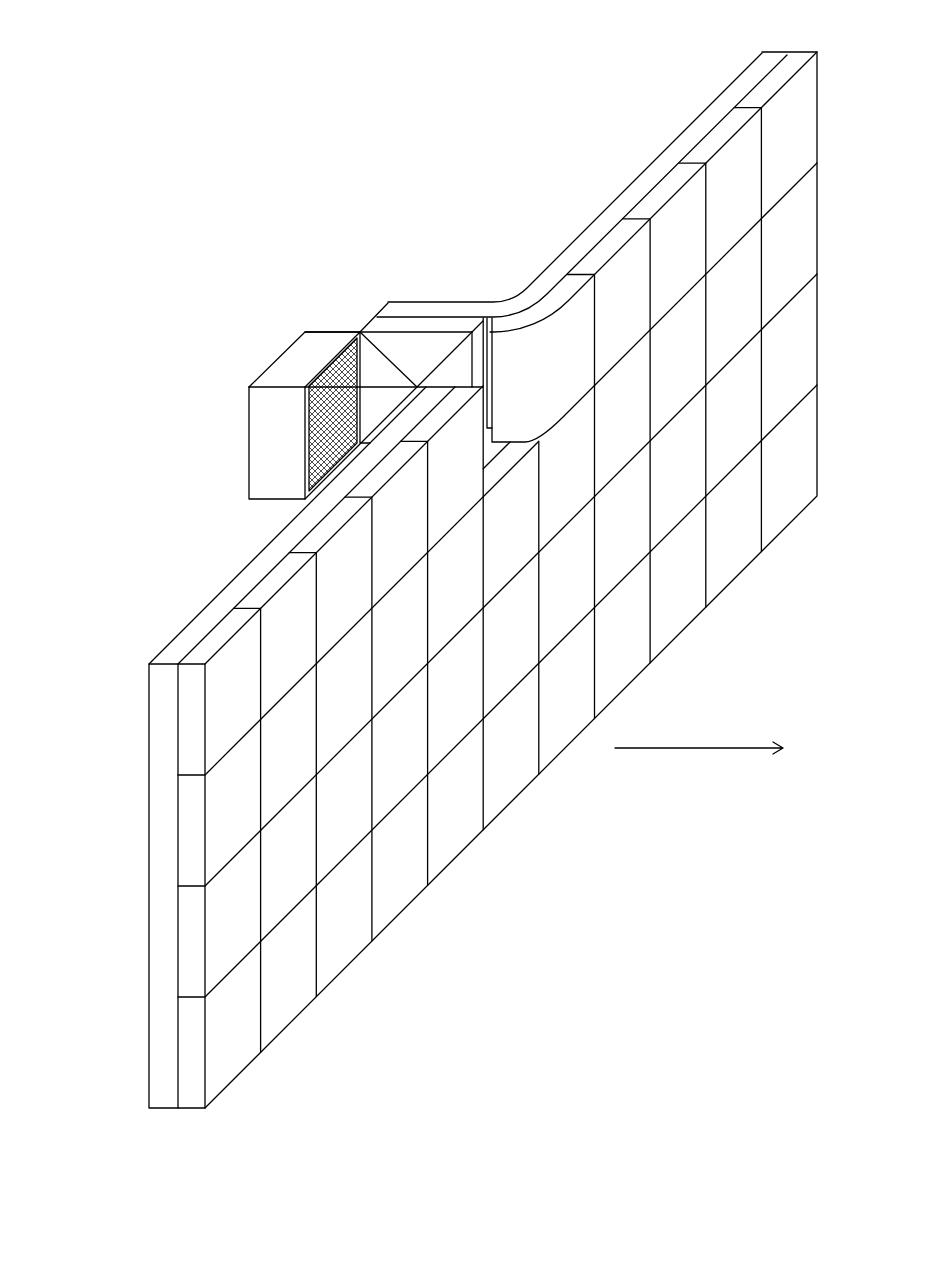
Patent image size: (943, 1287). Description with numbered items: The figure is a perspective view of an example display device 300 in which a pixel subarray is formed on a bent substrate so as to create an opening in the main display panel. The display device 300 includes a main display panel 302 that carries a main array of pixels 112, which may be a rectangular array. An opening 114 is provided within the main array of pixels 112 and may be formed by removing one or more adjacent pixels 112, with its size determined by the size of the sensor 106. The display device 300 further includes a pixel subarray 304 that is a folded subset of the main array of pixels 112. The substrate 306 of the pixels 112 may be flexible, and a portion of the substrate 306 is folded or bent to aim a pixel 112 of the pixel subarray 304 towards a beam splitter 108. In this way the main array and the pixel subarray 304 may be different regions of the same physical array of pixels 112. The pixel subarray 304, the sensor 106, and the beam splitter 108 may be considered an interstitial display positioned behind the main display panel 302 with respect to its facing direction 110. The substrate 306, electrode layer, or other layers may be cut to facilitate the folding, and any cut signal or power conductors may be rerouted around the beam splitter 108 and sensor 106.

The display device 300 is at (282, 135).
The main display panel 302 is at (585, 838).
The pixel subarray 304 is at (437, 297).
The substrate 306 is at (643, 187).
The sensor 106 is at (320, 326).
The beam splitter 108 is at (387, 343).
The facing direction 110 is at (699, 758).
The pixels 112 is at (402, 328).
The opening 114 is at (510, 352).